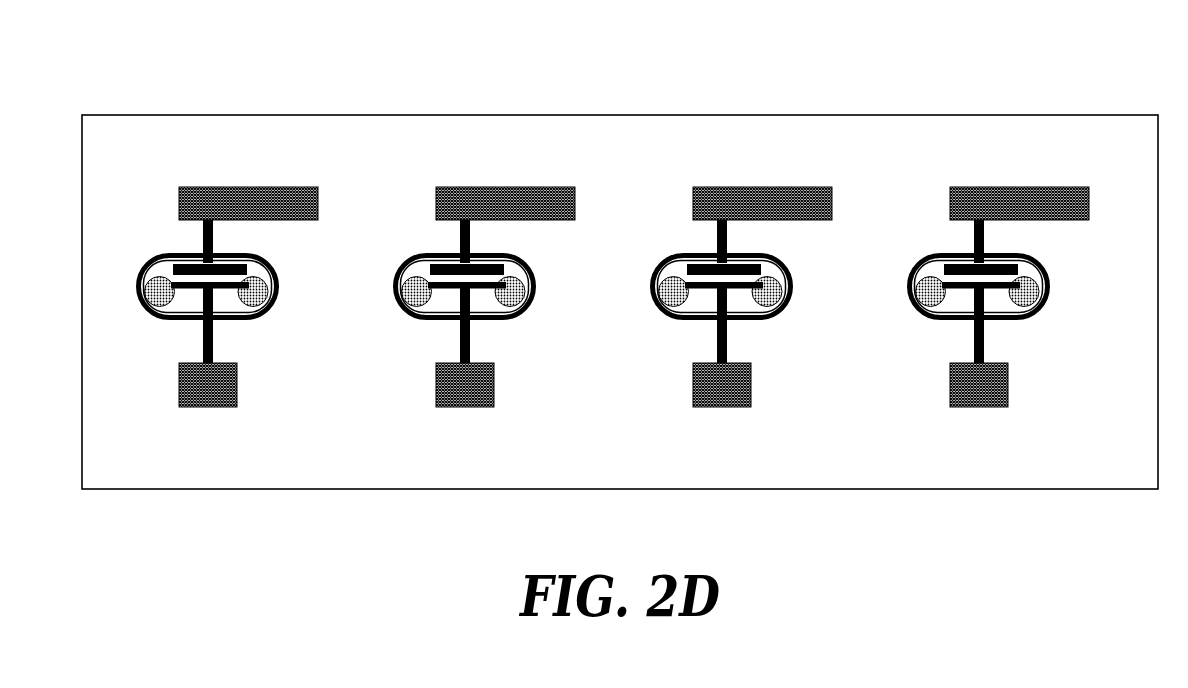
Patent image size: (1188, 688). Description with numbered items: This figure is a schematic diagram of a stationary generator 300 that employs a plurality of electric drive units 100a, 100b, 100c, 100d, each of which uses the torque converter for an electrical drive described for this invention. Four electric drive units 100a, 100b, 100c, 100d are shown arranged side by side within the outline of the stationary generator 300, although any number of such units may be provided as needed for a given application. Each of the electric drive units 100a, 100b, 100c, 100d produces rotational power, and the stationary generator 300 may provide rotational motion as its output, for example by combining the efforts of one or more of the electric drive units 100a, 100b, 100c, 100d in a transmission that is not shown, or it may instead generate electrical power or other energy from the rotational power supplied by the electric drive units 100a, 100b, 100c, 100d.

The stationary generator 300 is at (417, 90).
The electric drive unit 100a is at (252, 321).
The electric drive unit 100b is at (507, 321).
The electric drive unit 100c is at (763, 321).
The electric drive unit 100d is at (1022, 321).